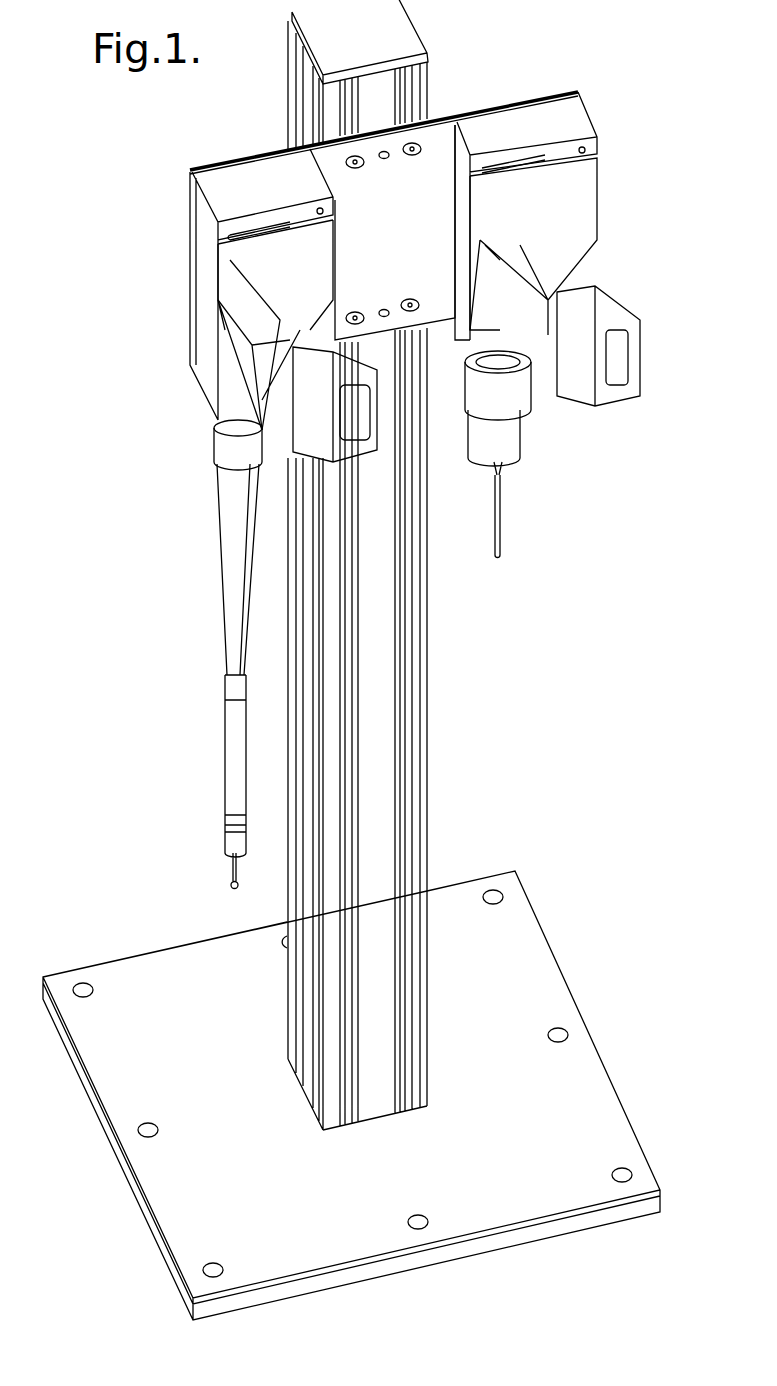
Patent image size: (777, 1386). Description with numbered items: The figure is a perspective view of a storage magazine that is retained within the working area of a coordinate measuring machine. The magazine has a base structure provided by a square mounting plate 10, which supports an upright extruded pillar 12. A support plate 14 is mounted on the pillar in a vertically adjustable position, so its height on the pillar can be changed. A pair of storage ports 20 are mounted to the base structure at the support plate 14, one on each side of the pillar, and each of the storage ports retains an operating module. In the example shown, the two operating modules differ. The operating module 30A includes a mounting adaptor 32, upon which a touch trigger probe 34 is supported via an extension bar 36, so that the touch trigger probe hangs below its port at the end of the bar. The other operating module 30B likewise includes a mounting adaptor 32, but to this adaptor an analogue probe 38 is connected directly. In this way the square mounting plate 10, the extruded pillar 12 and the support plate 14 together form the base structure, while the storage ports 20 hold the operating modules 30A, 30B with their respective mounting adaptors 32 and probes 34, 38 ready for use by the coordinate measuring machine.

The square mounting plate 10 is at (532, 956).
The extruded pillar 12 is at (415, 717).
The support plate 14 is at (552, 87).
The storage port 20 is at (602, 121).
The operating module 30A is at (179, 654).
The operating module 30B is at (553, 454).
The mounting adaptor 32 is at (527, 277).
The touch trigger probe 34 is at (228, 843).
The extension bar 36 is at (237, 683).
The analogue probe 38 is at (512, 452).